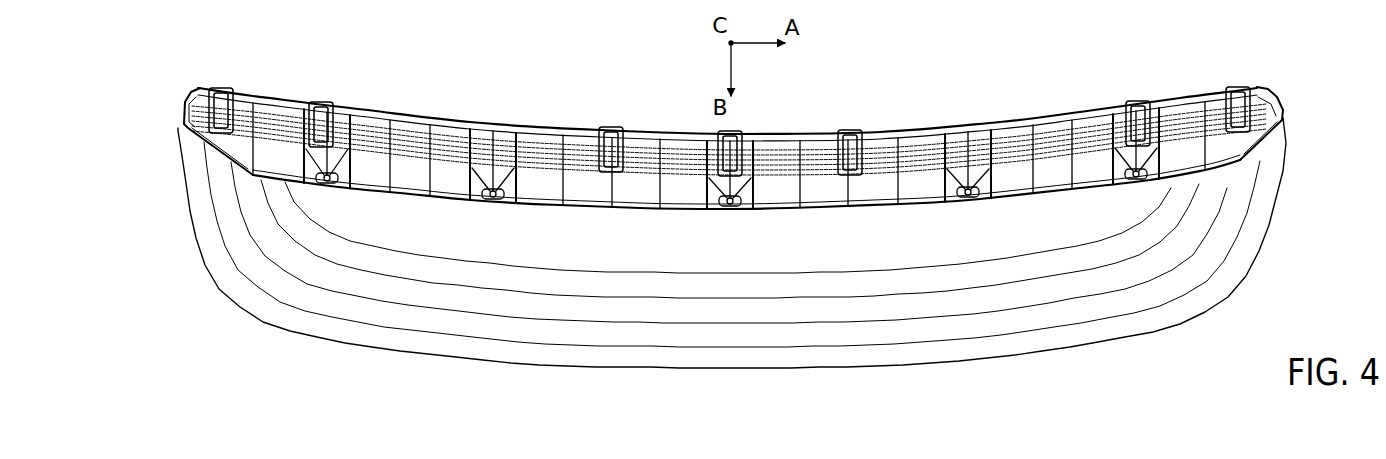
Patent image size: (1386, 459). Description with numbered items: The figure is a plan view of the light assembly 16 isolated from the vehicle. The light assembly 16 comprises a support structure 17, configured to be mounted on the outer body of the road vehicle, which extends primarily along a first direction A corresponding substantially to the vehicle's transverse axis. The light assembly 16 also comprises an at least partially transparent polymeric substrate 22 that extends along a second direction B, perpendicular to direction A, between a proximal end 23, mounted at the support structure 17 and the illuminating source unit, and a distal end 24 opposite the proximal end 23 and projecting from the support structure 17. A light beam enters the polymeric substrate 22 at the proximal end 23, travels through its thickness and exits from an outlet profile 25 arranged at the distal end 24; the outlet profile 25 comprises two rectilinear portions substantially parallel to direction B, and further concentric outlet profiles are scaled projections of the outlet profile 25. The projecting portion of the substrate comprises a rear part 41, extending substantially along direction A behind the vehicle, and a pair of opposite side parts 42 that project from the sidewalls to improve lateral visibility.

The light assembly 16 is at (766, 118).
The support structure 17 is at (926, 129).
The polymeric substrate 22 is at (532, 245).
The proximal end 23 is at (1278, 97).
The distal end 24 is at (773, 370).
The outlet profile 25 is at (620, 368).
The rear part 41 is at (829, 370).
The side parts 42 is at (186, 203).